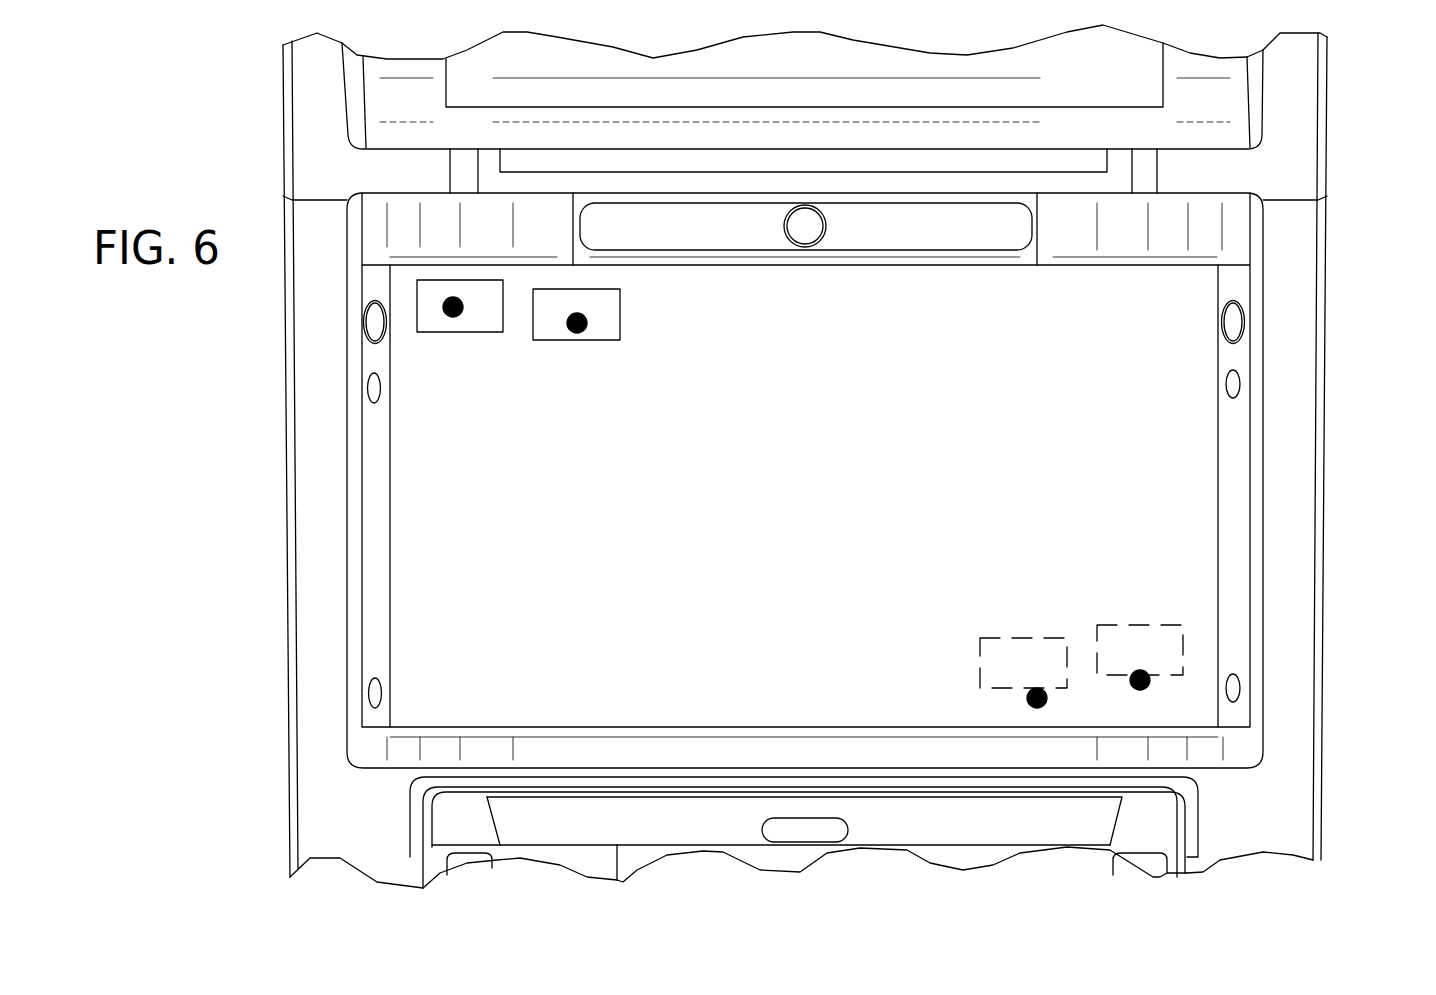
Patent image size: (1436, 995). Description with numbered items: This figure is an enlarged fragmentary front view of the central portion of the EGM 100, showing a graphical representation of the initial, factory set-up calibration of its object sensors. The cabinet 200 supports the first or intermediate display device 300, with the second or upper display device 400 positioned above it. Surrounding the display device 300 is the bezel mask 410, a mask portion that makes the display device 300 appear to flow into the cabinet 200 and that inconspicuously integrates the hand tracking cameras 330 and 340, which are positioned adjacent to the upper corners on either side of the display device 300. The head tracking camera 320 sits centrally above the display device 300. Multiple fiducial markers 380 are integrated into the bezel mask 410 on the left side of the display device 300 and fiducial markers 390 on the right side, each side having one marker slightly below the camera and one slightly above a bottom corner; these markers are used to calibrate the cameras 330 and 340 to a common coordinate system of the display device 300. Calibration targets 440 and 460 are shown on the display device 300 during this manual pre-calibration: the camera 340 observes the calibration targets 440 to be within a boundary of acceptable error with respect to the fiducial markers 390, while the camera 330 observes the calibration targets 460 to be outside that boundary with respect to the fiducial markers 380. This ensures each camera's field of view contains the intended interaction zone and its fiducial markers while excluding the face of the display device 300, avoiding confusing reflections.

The EGM 100 is at (214, 518).
The cabinet 200 is at (287, 662).
The first display device 300 is at (1178, 505).
The head tracking camera 320 is at (805, 220).
The camera 330 is at (373, 322).
The camera 340 is at (1233, 321).
The fiducial markers 380 is at (374, 392).
The fiducial markers 390 is at (1233, 385).
The second display device 400 is at (923, 90).
The bezel mask 410 is at (367, 568).
The calibration targets 440 is at (515, 340).
The calibration targets 460 is at (1075, 625).